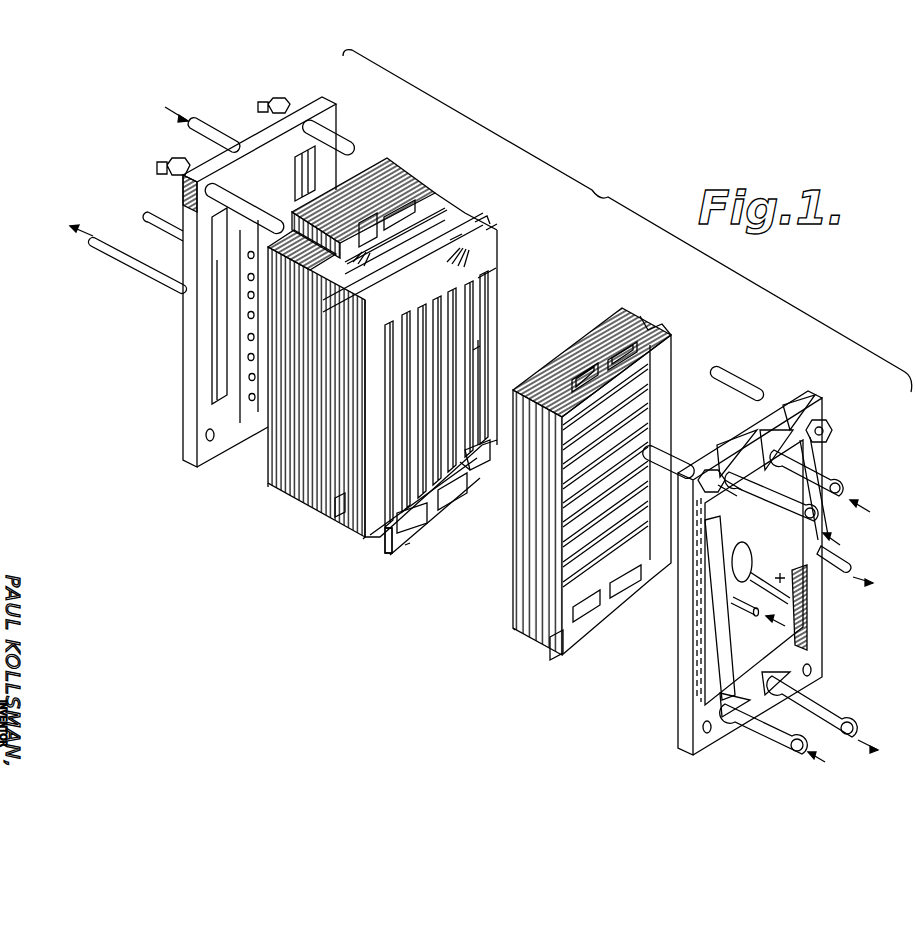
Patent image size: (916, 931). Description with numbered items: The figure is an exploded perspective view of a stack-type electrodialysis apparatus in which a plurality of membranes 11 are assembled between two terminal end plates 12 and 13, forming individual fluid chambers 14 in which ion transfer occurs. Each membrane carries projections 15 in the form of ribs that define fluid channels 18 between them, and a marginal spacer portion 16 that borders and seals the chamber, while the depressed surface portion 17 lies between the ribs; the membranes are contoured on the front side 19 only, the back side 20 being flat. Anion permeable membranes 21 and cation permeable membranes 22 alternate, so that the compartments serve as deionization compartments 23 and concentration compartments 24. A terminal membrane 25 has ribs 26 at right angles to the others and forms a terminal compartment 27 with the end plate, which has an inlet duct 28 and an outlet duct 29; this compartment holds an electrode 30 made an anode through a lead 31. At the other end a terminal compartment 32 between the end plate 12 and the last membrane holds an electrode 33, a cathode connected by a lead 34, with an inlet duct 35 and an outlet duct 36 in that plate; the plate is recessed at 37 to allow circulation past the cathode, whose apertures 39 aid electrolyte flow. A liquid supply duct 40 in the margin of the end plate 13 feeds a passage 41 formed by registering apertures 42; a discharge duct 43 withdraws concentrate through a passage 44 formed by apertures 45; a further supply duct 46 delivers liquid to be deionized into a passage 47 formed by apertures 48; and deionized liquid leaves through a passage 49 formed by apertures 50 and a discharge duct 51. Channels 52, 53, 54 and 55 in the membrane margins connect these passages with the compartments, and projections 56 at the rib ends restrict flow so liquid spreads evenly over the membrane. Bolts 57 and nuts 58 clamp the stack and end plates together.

The membranes 11 is at (478, 406).
The terminal end plate 12 is at (257, 284).
The terminal end plate 13 is at (750, 585).
The fluid chambers 14 is at (423, 236).
The projections 15 is at (474, 362).
The marginal spacer portion 16 is at (434, 369).
The depressed surface portion 17 is at (478, 322).
The fluid channels 18 is at (385, 535).
The front side 19 is at (488, 230).
The back side 20 is at (478, 228).
The anion permeable membranes 21 is at (407, 548).
The cation permeable membranes 22 is at (266, 489).
The deionization compartments 23 is at (330, 427).
The concentration compartments 24 is at (378, 425).
The terminal membrane 25 is at (663, 345).
The ribs 26 is at (645, 385).
The terminal compartment 27 is at (610, 473).
The inlet duct 28 is at (742, 615).
The outlet duct 29 is at (838, 558).
The electrode 30 is at (693, 652).
The lead 31 is at (765, 578).
The terminal compartment 32 is at (232, 358).
The electrode 33 is at (250, 413).
The lead 34 is at (170, 230).
The inlet duct 35 is at (203, 127).
The outlet duct 36 is at (123, 257).
The recess 37 is at (315, 168).
The apertures 39 is at (248, 315).
The liquid supply duct 40 is at (833, 472).
The passage 41 is at (462, 242).
The apertures 42 is at (455, 244).
The discharge duct 43 is at (818, 700).
The passage 44 is at (505, 577).
The apertures 45 is at (442, 508).
The supply duct 46 is at (765, 733).
The passage 47 is at (398, 545).
The apertures 48 is at (417, 527).
The passage 49 is at (585, 375).
The apertures 50 is at (423, 258).
The discharge duct 51 is at (772, 510).
The channel 52 is at (468, 254).
The channel 53 is at (467, 470).
The channel 54 is at (336, 509).
The channel 55 is at (352, 266).
The projections 56 is at (480, 440).
The bolts 57 is at (338, 137).
The nuts 58 is at (290, 103).